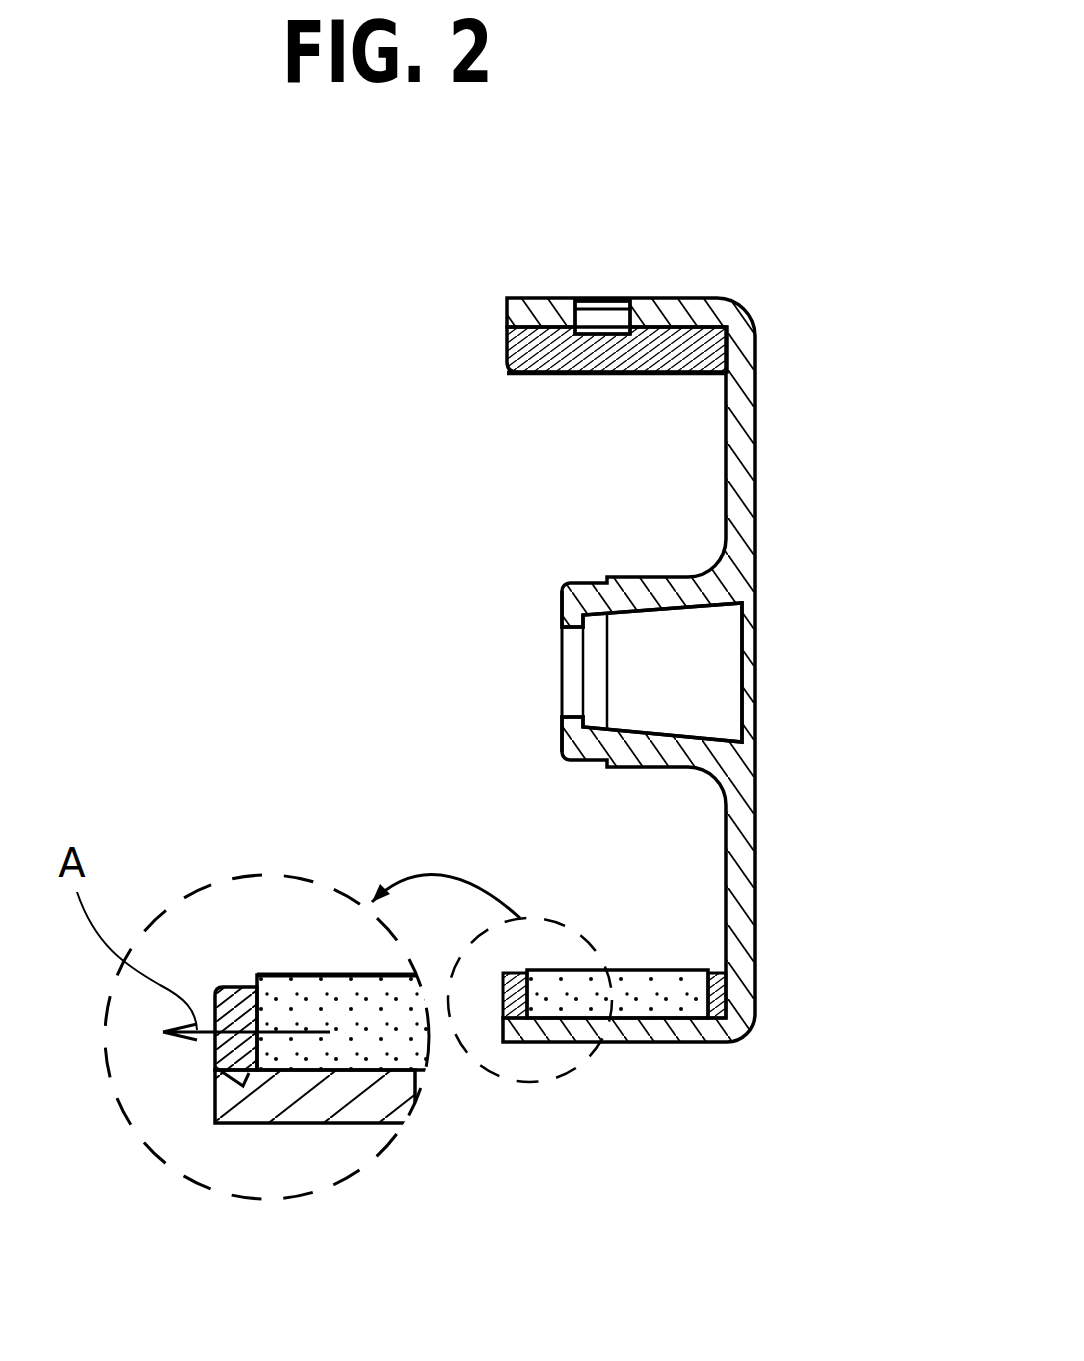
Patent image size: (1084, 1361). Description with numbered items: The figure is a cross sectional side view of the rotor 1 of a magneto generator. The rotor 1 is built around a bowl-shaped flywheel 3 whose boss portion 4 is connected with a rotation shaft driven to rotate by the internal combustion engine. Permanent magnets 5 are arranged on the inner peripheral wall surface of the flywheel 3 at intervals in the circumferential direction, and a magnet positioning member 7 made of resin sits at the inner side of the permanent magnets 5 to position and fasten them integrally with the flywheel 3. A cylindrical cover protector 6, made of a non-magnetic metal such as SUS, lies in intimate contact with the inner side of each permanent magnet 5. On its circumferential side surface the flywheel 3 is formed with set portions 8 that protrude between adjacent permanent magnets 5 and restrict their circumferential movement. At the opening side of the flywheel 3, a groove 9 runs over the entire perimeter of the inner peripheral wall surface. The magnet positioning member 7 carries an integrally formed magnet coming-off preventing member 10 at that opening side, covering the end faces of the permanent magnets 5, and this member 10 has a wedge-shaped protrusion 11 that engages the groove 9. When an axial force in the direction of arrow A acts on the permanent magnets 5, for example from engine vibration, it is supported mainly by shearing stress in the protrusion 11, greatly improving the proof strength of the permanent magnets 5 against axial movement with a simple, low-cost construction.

The rotor 1 is at (780, 285).
The flywheel 3 is at (748, 430).
The boss portion 4 is at (628, 600).
The permanent magnets 5 is at (668, 992).
The cover protector 6 is at (600, 374).
The magnet positioning member 7 is at (677, 347).
The set portions 8 is at (607, 309).
The groove 9 is at (252, 1076).
The magnet coming-off preventing member 10 is at (233, 1000).
The wedge-shaped protrusion 11 is at (232, 1090).